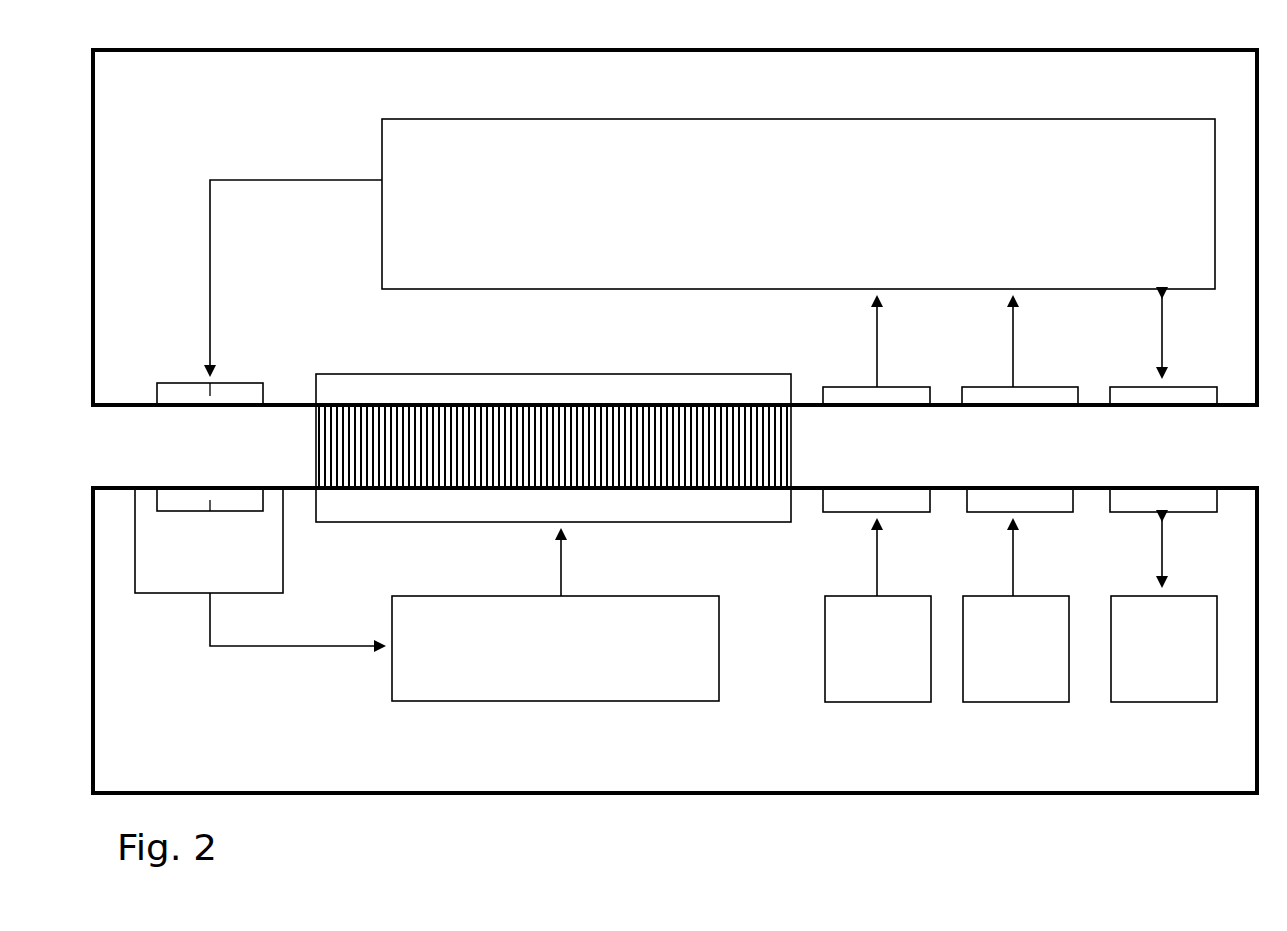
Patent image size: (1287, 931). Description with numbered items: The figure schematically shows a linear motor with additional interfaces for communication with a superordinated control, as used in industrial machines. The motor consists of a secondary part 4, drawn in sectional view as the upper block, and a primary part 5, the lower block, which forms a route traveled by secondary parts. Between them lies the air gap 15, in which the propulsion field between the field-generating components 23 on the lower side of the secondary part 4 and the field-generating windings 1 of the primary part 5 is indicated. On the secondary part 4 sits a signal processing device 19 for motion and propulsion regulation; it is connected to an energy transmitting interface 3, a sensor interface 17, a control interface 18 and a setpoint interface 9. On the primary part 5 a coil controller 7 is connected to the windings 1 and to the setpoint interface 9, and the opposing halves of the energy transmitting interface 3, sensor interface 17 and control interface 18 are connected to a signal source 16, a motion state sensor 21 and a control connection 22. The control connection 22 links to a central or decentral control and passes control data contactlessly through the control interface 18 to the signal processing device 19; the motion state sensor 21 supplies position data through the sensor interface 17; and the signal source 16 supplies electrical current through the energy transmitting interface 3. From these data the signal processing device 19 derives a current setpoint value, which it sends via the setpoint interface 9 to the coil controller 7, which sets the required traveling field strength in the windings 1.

The field-generating windings 1 is at (717, 512).
The energy transmitting interface 3 is at (877, 405).
The secondary part 4 is at (675, 227).
The primary part 5 is at (675, 640).
The coil controller 7 is at (555, 615).
The setpoint interface 9 is at (210, 405).
The air gap 15 is at (240, 536).
The signal source 16 is at (878, 649).
The sensor interface 17 is at (1013, 405).
The control interface 18 is at (1162, 405).
The signal processing device 19 is at (712, 247).
The motion state sensor 21 is at (1016, 649).
The control connection 22 is at (1164, 649).
The field-generating components 23 is at (508, 382).